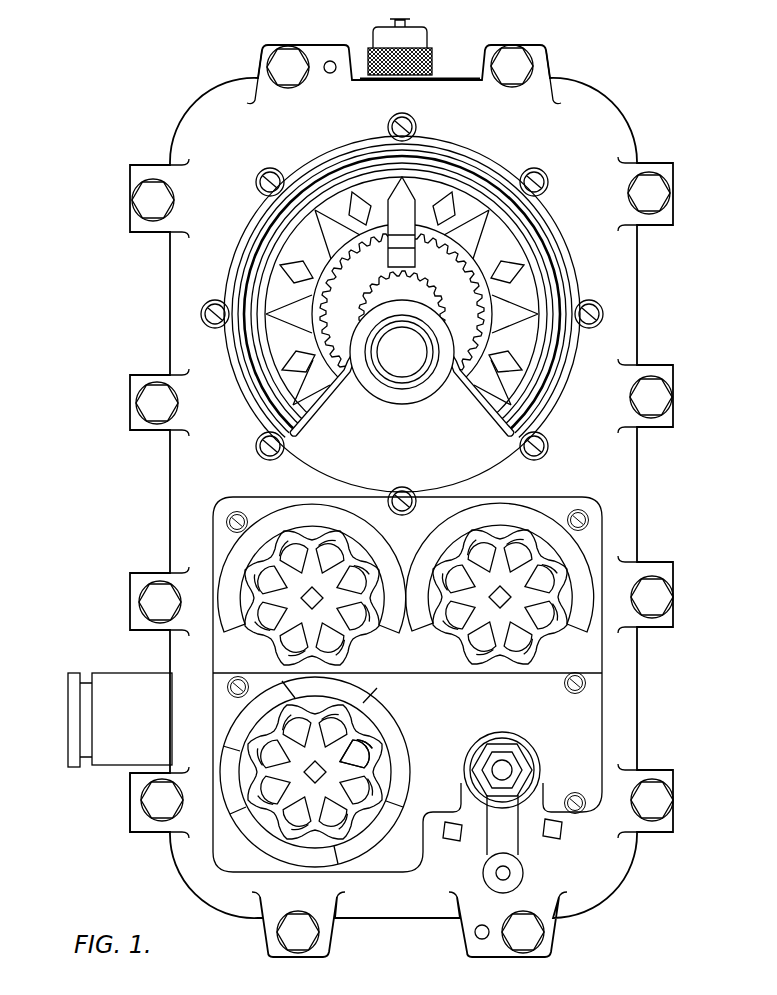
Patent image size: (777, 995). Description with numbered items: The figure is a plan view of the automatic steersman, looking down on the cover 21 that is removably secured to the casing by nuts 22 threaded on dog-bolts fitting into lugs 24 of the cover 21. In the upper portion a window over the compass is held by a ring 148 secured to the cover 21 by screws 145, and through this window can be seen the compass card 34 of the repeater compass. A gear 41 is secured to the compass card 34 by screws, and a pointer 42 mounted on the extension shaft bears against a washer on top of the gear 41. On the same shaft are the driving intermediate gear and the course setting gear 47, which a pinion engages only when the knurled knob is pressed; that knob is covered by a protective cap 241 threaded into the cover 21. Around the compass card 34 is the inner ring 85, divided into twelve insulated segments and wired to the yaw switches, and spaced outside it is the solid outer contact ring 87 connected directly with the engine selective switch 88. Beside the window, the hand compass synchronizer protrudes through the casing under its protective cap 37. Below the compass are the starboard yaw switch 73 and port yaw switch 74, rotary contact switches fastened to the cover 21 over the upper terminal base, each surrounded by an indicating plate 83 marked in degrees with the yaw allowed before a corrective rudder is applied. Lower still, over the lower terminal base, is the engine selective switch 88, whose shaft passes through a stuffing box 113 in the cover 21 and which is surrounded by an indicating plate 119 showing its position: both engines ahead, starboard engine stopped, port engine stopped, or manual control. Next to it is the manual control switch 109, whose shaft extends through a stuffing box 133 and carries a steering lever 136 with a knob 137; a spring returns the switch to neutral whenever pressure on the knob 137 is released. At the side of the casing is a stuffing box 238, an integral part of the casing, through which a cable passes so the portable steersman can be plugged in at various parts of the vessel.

The cover 21 is at (401, 501).
The nuts 22 is at (140, 804).
The lugs 24 is at (163, 834).
The protective cap 37 is at (428, 38).
The pointer 42 is at (402, 182).
The gear 41 is at (385, 258).
The compass card 34 is at (402, 314).
The course setting gear 47 is at (402, 314).
The inner ring 85 is at (272, 233).
The outer contact ring 87 is at (252, 266).
The ring 148 is at (556, 222).
The screws 145 is at (592, 300).
The protective cap 241 is at (412, 367).
The port yaw switch 74 is at (352, 650).
The starboard yaw switch 73 is at (549, 648).
The indicating plates 83 is at (420, 635).
The engine selective switch 88 is at (410, 764).
The stuffing box 113 is at (380, 743).
The indicating plate 119 is at (384, 711).
The manual control switch 109 is at (510, 748).
The stuffing box 133 is at (528, 753).
The steering lever 136 is at (520, 852).
The knob 137 is at (524, 876).
The stuffing box 238 is at (120, 720).